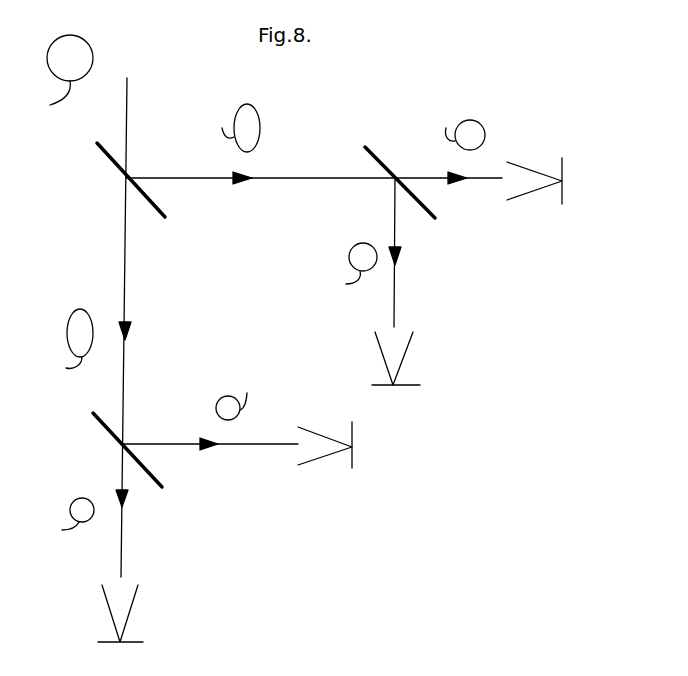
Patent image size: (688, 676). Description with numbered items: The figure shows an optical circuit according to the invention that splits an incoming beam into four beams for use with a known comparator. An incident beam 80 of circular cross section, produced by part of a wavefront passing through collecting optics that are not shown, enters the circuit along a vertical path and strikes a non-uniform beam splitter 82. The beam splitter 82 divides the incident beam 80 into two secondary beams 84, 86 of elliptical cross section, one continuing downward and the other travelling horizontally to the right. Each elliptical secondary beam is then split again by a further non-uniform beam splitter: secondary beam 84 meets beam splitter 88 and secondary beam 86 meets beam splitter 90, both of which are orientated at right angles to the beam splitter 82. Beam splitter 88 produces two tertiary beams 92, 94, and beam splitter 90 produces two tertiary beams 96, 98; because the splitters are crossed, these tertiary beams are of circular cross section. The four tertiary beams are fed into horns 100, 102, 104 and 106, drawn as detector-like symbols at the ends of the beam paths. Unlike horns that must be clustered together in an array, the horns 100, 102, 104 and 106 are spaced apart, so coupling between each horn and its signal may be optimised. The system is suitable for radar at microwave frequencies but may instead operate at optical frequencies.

The incident beam 80 is at (127, 120).
The non-uniform beam splitter 82 is at (103, 155).
The secondary beam 84 is at (123, 380).
The secondary beam 86 is at (198, 178).
The non-uniform beam splitter 88 is at (93, 420).
The non-uniform beam splitter 90 is at (373, 147).
The tertiary beam 92 is at (121, 545).
The tertiary beam 94 is at (265, 444).
The tertiary beam 96 is at (394, 294).
The tertiary beam 98 is at (427, 178).
The horn 100 is at (135, 603).
The horn 102 is at (318, 458).
The horn 104 is at (410, 345).
The horn 106 is at (523, 196).